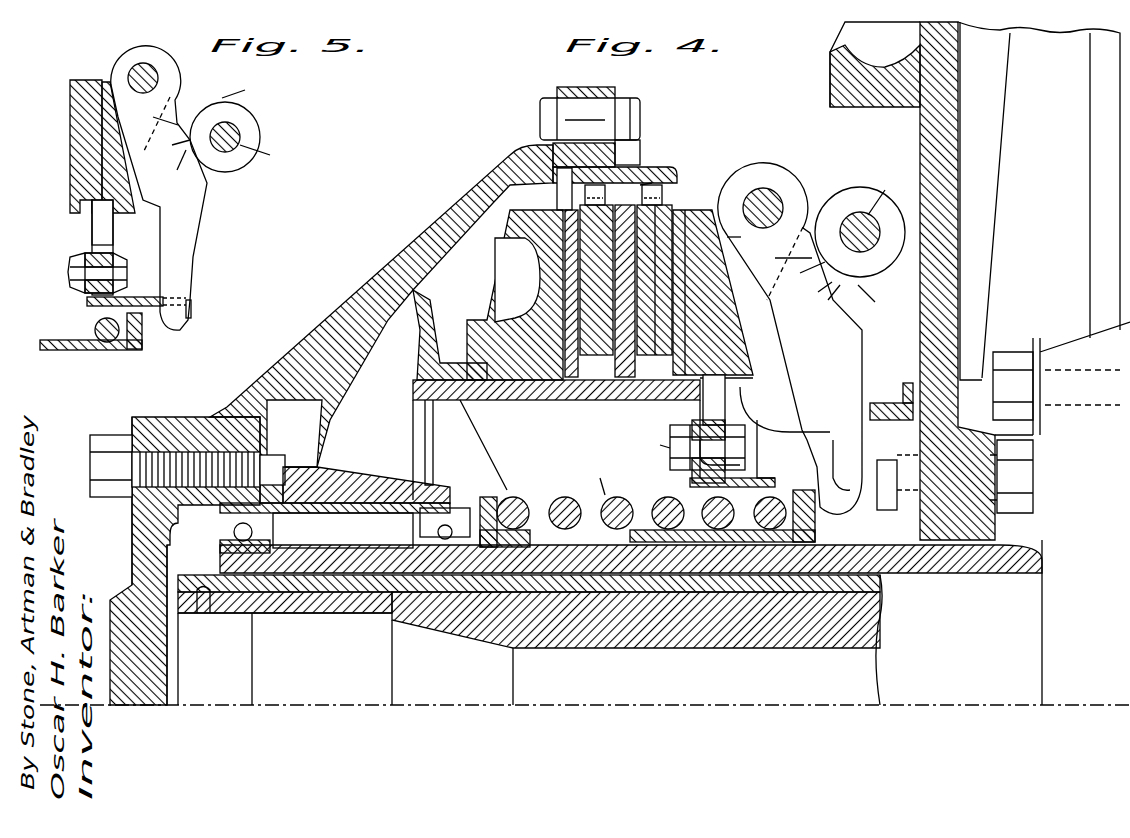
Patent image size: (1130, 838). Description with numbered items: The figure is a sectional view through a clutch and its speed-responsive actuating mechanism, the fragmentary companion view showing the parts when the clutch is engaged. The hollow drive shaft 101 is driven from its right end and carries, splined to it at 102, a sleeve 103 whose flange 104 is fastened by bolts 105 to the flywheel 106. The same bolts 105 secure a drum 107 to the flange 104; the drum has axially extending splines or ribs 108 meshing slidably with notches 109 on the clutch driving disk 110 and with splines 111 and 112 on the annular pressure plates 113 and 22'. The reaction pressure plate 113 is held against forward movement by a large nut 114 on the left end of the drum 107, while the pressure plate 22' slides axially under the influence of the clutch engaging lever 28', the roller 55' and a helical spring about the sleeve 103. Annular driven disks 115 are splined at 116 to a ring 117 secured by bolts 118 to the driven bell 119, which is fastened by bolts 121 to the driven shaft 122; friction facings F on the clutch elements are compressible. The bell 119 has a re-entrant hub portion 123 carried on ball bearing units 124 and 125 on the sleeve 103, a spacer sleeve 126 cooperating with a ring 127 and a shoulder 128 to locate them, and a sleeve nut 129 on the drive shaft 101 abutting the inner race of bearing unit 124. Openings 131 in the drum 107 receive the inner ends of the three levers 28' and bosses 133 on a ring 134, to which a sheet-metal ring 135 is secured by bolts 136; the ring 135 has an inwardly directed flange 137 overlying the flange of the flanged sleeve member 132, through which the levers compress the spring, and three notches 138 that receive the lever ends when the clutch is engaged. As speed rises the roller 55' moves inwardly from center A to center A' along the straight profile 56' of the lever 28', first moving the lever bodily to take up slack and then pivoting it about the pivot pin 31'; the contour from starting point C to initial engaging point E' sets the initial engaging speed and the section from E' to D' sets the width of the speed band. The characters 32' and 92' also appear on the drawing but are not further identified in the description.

In FIG. 4, the drive shaft 101 is at (985, 645).
In FIG. 4, the spline connection 102 is at (662, 575).
In FIG. 4, the sleeve 103 is at (900, 575).
In FIG. 4, the flange 104 is at (1000, 540).
In FIG. 4, the bolts 105 is at (1033, 478).
In FIG. 4, the flywheel 106 is at (910, 139).
In FIG. 4, the drum 107 is at (518, 400).
In FIG. 4, the splines or ribs 108 is at (596, 365).
In FIG. 4, the notches 109 is at (627, 385).
In FIG. 4, the clutch driving disk 110 is at (650, 165).
In FIG. 4, the splines 111 is at (525, 385).
In FIG. 5, the splines 112 is at (113, 215).
In FIG. 4, the splines 112 is at (745, 378).
In FIG. 4, the reaction pressure plate 113 is at (512, 235).
In FIG. 4, the large nut 114 is at (447, 363).
In FIG. 4, the driven disks 115 is at (558, 200).
In FIG. 4, the splines 116 is at (660, 190).
In FIG. 4, the ring 117 is at (605, 190).
In FIG. 4, the bolts 118 is at (640, 118).
In FIG. 4, the driven bell 119 is at (360, 290).
In FIG. 4, the bolts 121 is at (205, 417).
In FIG. 4, the driven shaft 122 is at (125, 525).
In FIG. 4, the re-entrant hub portion 123 is at (340, 478).
In FIG. 4, the ball bearing unit 124 is at (258, 530).
In FIG. 4, the ball bearing unit 125 is at (412, 530).
In FIG. 4, the spacer sleeve 126 is at (340, 553).
In FIG. 4, the ring 127 is at (470, 495).
In FIG. 4, the shoulder 128 is at (535, 525).
In FIG. 4, the sleeve nut 129 is at (292, 613).
In FIG. 4, the openings 131 is at (790, 437).
In FIG. 5, the flanged sleeve member 132 is at (132, 350).
In FIG. 4, the flanged sleeve member 132 is at (836, 538).
In FIG. 5, the bosses 133 is at (92, 222).
In FIG. 4, the bosses 133 is at (703, 400).
In FIG. 5, the ring 134 is at (95, 248).
In FIG. 4, the ring 134 is at (716, 425).
In FIG. 5, the second ring 135 is at (90, 302).
In FIG. 4, the second ring 135 is at (690, 484).
In FIG. 4, the bolts 136 is at (645, 446).
In FIG. 4, the flange 137 is at (877, 500).
In FIG. 5, the notches 138 is at (192, 296).
In FIG. 4, the notches 138 is at (775, 475).
In FIG. 5, the pressure plate 22' is at (58, 146).
In FIG. 4, the pressure plate 22' is at (713, 275).
In FIG. 5, the clutch engaging lever 28' is at (179, 188).
In FIG. 4, the clutch engaging lever 28' is at (813, 339).
In FIG. 5, the pivot pin 31' is at (178, 78).
In FIG. 4, the pivot pin 31' is at (773, 186).
In FIG. 5, the cone section 32' is at (87, 126).
In FIG. 4, the cone section 32' is at (747, 237).
In FIG. 5, the roller 55' is at (249, 137).
In FIG. 4, the roller 55' is at (860, 213).
In FIG. 4, the profile 56' is at (807, 292).
In FIG. 4, the spring coil 92' is at (598, 478).
In FIG. 5, the center A is at (241, 88).
In FIG. 4, the center A is at (881, 193).
In FIG. 5, the center A' is at (264, 154).
In FIG. 4, the center A' is at (876, 299).
In FIG. 5, the starting point C is at (158, 116).
In FIG. 4, the starting point C is at (786, 258).
In FIG. 5, the profile end point D' is at (174, 168).
In FIG. 4, the profile end point D' is at (822, 302).
In FIG. 5, the initial clutch engaging point E' is at (171, 146).
In FIG. 4, the initial clutch engaging point E' is at (803, 272).
In FIG. 4, the friction facings F is at (640, 186).